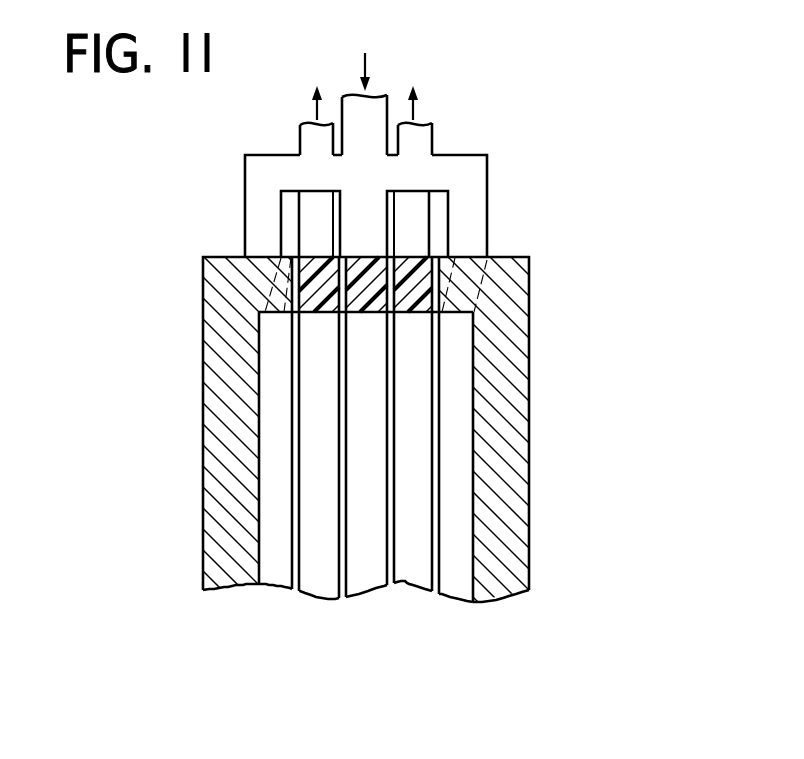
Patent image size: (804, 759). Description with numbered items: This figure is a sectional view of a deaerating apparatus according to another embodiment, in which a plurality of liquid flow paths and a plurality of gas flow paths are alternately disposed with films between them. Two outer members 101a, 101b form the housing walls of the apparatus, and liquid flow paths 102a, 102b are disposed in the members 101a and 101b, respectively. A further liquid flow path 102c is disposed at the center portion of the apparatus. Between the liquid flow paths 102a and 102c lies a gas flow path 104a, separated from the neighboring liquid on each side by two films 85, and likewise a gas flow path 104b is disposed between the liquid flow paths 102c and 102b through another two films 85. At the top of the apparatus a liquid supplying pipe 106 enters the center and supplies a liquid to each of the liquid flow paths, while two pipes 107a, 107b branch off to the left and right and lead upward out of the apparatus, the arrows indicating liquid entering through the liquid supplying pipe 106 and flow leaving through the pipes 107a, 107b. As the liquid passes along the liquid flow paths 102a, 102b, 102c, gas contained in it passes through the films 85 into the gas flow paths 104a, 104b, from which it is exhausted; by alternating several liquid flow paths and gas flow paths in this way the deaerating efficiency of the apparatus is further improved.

The film 85 is at (293, 575).
The member 101a is at (203, 305).
The member 101b is at (529, 348).
The liquid flow path 102a is at (200, 642).
The liquid flow path 102b is at (447, 594).
The liquid flow path 102c is at (370, 585).
The gas flow path 104a is at (317, 592).
The gas flow path 104b is at (422, 585).
The liquid supplying pipe 106 is at (352, 96).
The outlet pipe 107a is at (228, 92).
The outlet pipe 107b is at (424, 141).